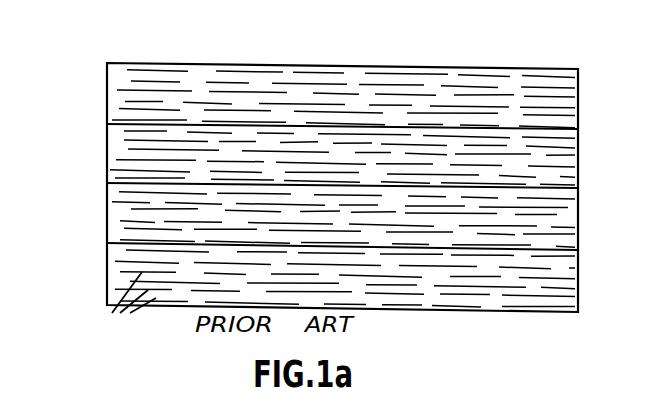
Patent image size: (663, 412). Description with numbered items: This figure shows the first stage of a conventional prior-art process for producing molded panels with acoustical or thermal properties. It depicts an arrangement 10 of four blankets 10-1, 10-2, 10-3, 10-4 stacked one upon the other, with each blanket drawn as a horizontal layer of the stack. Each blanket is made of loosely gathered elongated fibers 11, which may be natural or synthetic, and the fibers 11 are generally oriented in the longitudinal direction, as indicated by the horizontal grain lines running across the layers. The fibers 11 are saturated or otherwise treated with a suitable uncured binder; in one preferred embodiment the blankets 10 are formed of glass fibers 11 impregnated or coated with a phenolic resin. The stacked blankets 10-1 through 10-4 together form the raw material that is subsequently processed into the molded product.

The arrangement of blankets 10 is at (177, 43).
The blanket 10-1 is at (107, 97).
The blanket 10-2 is at (107, 153).
The blanket 10-3 is at (107, 218).
The blanket 10-4 is at (107, 277).
The fibers 11 is at (130, 313).